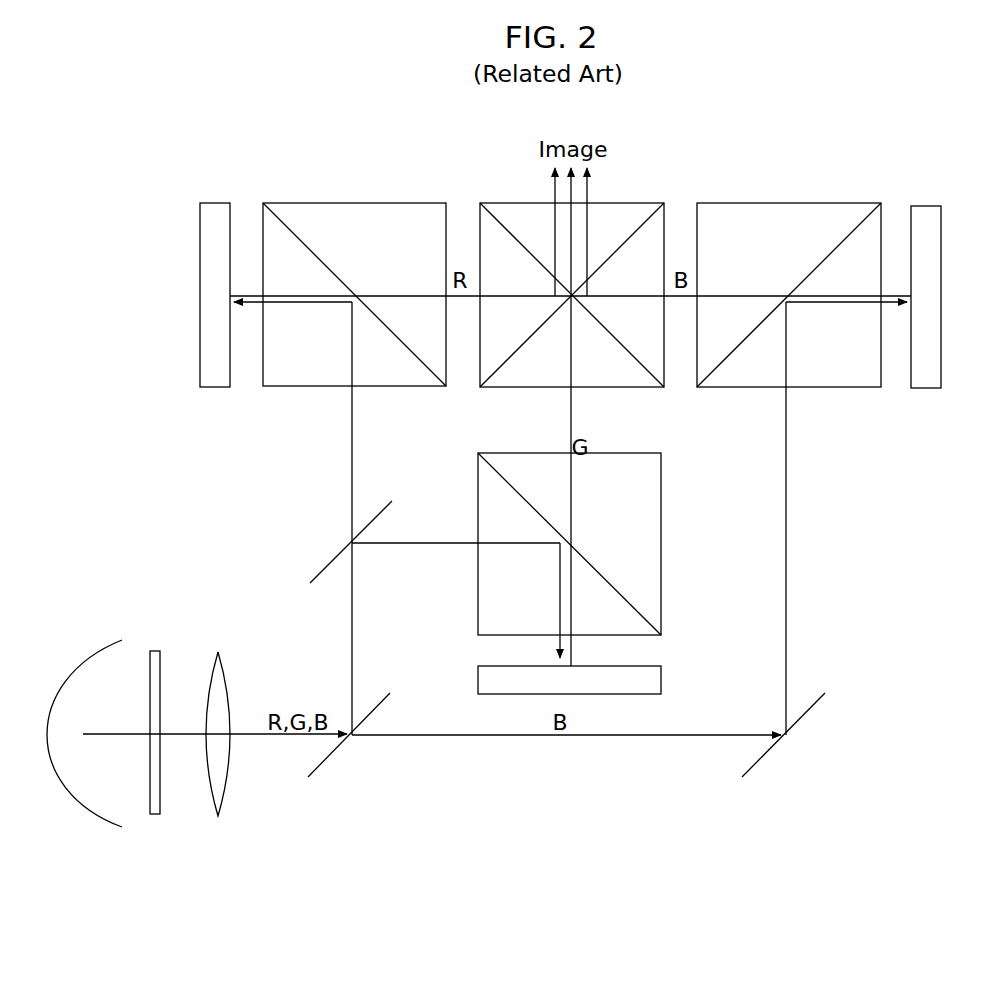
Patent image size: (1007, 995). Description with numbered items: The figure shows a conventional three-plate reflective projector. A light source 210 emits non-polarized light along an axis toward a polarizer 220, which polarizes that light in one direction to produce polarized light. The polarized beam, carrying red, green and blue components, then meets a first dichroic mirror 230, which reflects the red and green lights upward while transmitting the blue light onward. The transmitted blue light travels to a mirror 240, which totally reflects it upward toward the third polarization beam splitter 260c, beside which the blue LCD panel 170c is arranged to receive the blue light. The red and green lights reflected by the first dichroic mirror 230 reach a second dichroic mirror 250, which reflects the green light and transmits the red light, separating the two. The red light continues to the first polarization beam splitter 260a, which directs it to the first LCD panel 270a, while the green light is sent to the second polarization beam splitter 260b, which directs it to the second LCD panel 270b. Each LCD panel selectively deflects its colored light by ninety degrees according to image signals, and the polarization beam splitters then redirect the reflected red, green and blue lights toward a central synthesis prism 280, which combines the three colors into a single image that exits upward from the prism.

The light source 210 is at (78, 795).
The polarizer 220 is at (155, 814).
The first dichroic mirror 230 is at (327, 758).
The mirror 240 is at (763, 757).
The second dichroic mirror 250 is at (335, 555).
The first polarization beam splitter 260a is at (402, 203).
The first LCD panel 270a is at (293, 202).
The synthesis prism 280 is at (620, 202).
The third polarization beam splitter 260c is at (742, 203).
The blue LCD 170c is at (849, 203).
The second polarization beam splitter 260b is at (662, 543).
The second LCD panel 270b is at (662, 680).